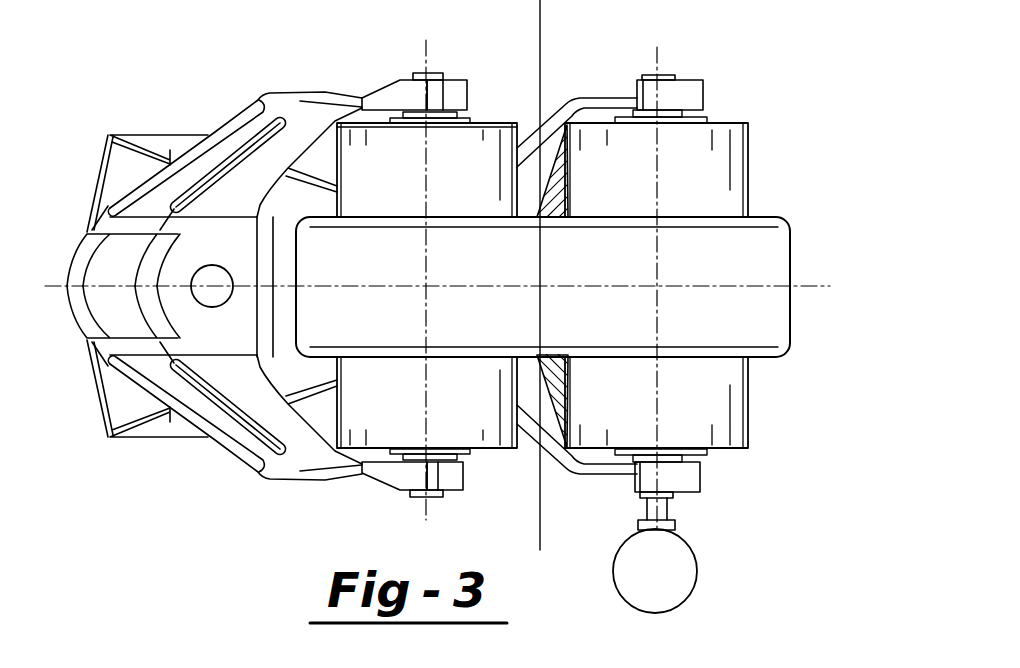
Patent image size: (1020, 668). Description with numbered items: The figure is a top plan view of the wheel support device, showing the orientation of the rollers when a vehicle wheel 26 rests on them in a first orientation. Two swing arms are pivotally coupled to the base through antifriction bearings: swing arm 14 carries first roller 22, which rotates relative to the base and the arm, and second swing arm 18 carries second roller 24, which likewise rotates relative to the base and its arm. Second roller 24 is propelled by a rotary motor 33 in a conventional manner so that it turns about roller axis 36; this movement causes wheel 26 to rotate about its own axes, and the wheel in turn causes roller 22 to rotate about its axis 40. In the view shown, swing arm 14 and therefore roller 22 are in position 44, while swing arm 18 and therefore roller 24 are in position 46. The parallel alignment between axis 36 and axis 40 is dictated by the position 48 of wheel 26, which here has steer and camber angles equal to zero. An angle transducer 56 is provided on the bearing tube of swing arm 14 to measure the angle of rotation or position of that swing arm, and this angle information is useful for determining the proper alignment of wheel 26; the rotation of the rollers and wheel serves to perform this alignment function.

The swing arm 14 is at (257, 107).
The second swing arm 18 is at (592, 98).
The first roller 22 is at (398, 185).
The second roller 24 is at (718, 178).
The wheel 26 is at (608, 263).
The rotary motor 33 is at (697, 560).
The roller axis 36 is at (660, 62).
The axis 40 is at (432, 62).
The position 44 is at (380, 404).
The position 46 is at (706, 406).
The position 48 is at (732, 283).
The angle transducer 56 is at (234, 282).